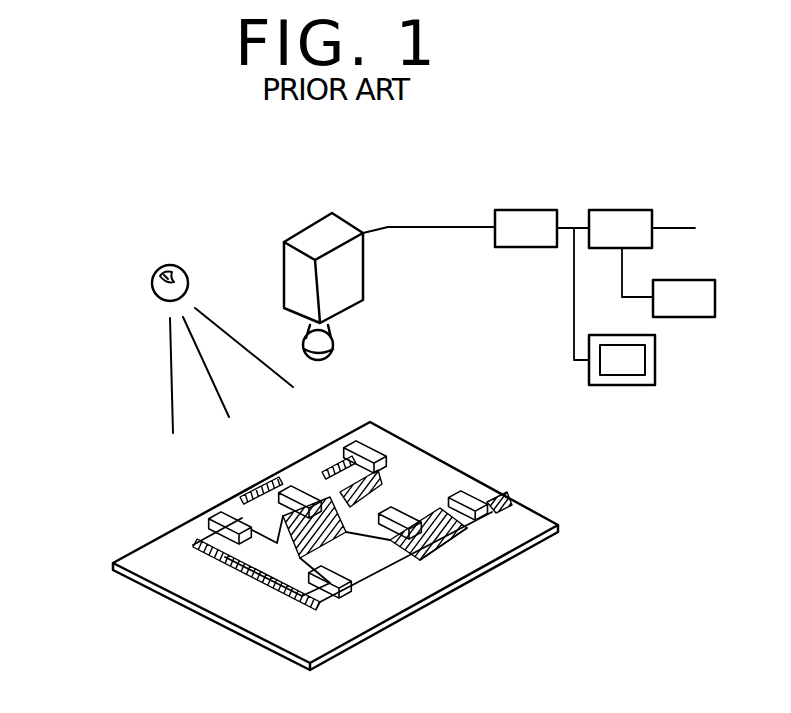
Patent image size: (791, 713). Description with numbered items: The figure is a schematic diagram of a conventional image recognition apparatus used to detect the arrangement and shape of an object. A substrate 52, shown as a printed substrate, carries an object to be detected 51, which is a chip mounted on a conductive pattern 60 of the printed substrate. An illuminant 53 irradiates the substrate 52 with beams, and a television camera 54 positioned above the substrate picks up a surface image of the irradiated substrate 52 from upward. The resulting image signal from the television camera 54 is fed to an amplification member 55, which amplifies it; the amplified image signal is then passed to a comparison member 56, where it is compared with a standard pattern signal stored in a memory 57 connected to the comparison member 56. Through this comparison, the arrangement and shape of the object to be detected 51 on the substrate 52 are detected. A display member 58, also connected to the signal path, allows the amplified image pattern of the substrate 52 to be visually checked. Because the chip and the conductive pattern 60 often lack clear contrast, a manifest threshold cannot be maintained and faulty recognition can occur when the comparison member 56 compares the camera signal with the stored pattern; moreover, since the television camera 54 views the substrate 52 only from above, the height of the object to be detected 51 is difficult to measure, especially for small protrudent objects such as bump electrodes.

The object to be detected 51 is at (480, 522).
The substrate 52 is at (433, 583).
The illuminant 53 is at (152, 294).
The television camera 54 is at (368, 287).
The amplification member 55 is at (505, 210).
The comparison member 56 is at (612, 210).
The memory 57 is at (697, 280).
The display member 58 is at (657, 370).
The conductive pattern 60 is at (520, 493).